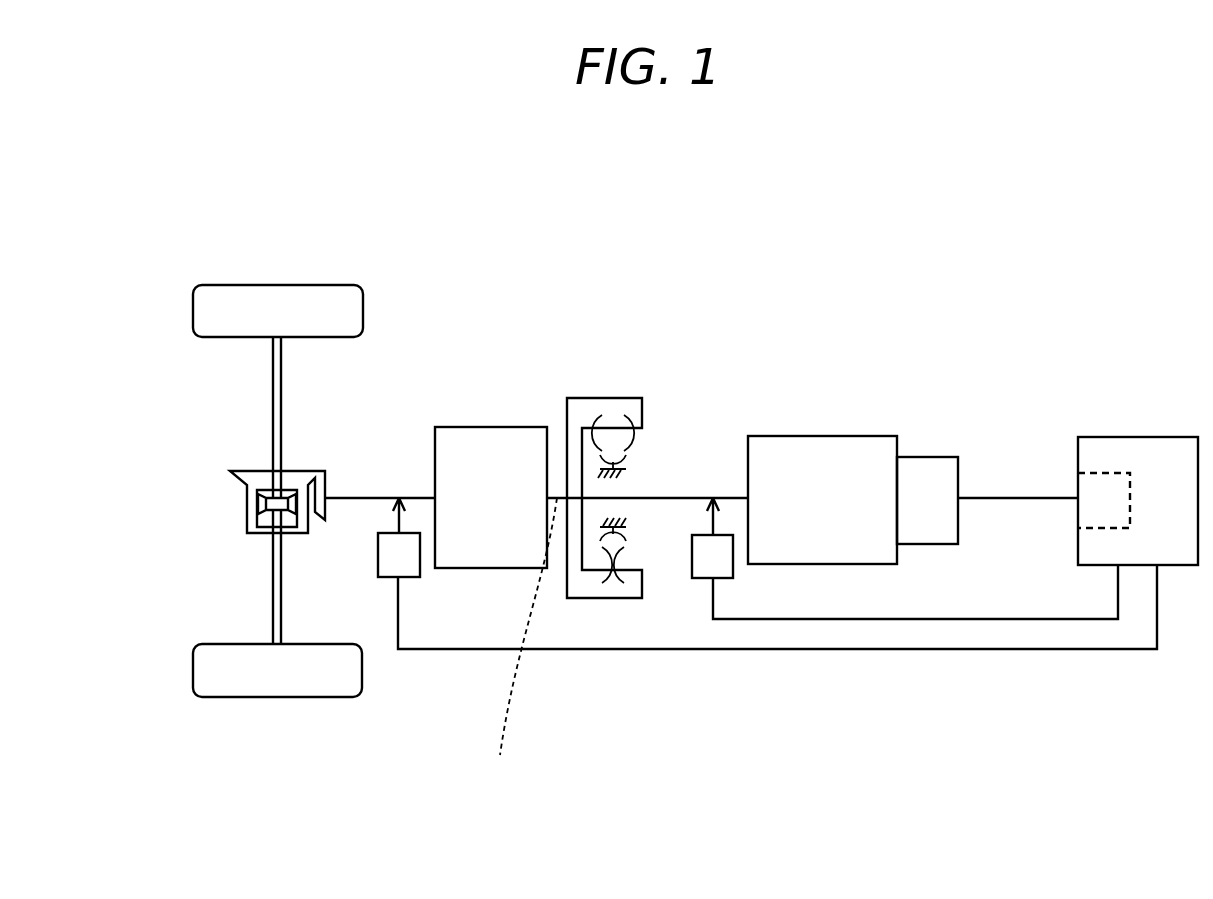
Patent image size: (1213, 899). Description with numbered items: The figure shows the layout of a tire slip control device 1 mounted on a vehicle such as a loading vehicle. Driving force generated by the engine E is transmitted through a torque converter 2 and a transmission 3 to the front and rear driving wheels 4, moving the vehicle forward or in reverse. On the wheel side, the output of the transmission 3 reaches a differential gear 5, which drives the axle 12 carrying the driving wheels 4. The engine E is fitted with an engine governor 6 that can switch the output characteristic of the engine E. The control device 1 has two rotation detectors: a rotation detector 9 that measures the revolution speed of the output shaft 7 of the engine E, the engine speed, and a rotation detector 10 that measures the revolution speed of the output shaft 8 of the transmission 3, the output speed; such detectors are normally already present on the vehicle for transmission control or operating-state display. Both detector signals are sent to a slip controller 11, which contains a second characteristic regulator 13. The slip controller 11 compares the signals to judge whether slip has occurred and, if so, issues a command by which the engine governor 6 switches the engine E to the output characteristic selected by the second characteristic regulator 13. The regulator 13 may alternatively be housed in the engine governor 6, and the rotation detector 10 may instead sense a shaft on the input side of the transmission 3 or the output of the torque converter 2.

The control device 1 is at (947, 764).
The torque converter 2 is at (613, 395).
The transmission 3 is at (485, 427).
The driving wheels 4 is at (284, 285).
The differential gear 5 is at (247, 513).
The engine governor 6 is at (925, 457).
The output shaft of the engine 7 is at (688, 498).
The output shaft of the transmission 8 is at (357, 496).
The rotation detector 9 is at (703, 578).
The rotation detector 10 is at (410, 577).
The slip controller 11 is at (1120, 437).
The axle 12 is at (272, 587).
The second characteristic regulator 13 is at (1133, 488).
The engine E is at (828, 436).